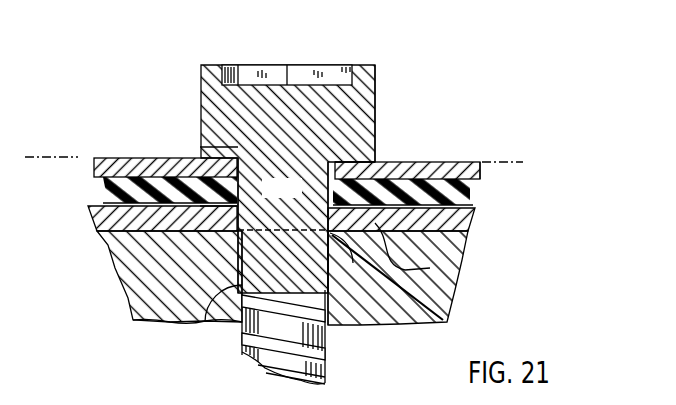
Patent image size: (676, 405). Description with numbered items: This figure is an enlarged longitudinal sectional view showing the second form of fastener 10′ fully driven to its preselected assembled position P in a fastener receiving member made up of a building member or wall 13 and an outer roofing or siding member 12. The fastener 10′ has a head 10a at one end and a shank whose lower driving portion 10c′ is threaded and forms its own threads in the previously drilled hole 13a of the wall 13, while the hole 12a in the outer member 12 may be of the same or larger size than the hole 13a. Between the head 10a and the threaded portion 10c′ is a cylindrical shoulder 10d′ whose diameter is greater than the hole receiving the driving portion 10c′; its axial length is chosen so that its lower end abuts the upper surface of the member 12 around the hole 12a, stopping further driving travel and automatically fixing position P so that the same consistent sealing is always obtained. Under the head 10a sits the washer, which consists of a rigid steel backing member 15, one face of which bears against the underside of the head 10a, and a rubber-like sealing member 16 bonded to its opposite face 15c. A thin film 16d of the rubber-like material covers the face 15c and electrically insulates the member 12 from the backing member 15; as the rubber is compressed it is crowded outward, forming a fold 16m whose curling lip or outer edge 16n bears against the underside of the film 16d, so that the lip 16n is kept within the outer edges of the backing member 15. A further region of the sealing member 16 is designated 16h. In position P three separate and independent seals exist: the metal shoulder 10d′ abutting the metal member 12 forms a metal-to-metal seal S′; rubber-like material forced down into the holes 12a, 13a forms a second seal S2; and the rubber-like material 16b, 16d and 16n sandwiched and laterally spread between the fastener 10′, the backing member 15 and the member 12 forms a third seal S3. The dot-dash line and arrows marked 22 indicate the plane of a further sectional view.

The head 10a is at (365, 65).
The screw or fastening element 10′ is at (320, 60).
The threaded portion 10c′ is at (325, 354).
The shoulder 10d′ is at (380, 162).
The roofing or siding member 12 is at (457, 223).
The hole 12a is at (455, 278).
The building member or wall 13 is at (443, 257).
The hole 13a is at (200, 322).
The backing member 15 is at (427, 162).
The opposite face 15c is at (448, 162).
The rubber-like sealing member 16 is at (470, 203).
The rubber-like material 16b is at (375, 120).
The film 16d is at (480, 181).
The sealing washer lip 16h is at (233, 212).
The fold 16m is at (128, 146).
The outer edge or lip 16n is at (103, 188).
The section line 22 is at (43, 143).
The assembled position P is at (66, 210).
The first seal S′ is at (233, 207).
The second seal S2 is at (340, 240).
The third seal S3 is at (250, 154).